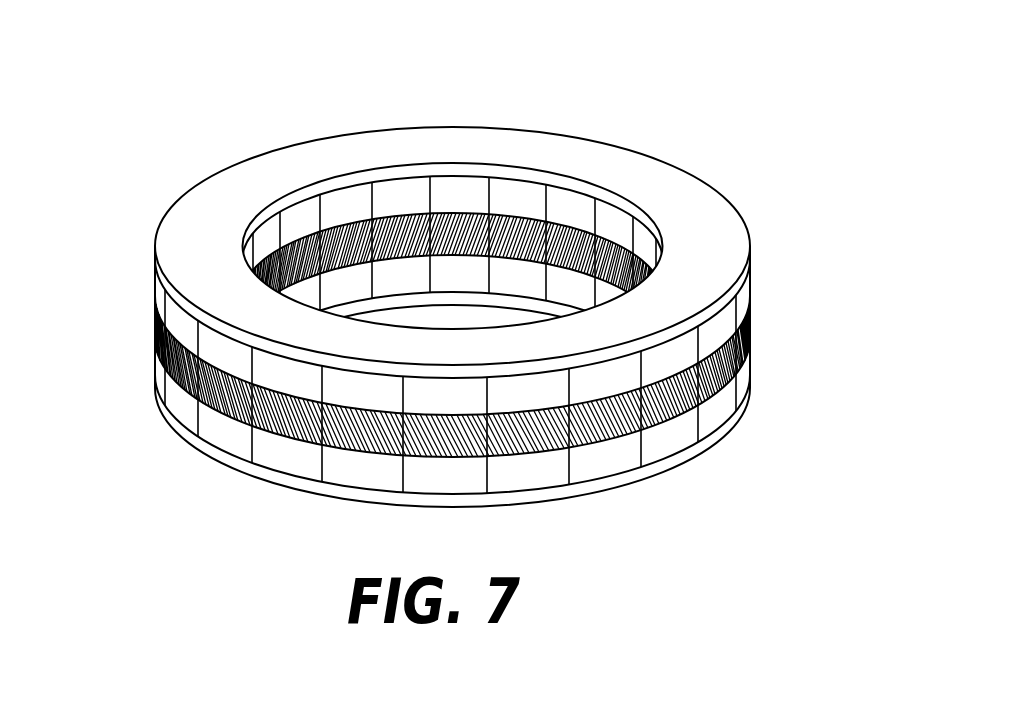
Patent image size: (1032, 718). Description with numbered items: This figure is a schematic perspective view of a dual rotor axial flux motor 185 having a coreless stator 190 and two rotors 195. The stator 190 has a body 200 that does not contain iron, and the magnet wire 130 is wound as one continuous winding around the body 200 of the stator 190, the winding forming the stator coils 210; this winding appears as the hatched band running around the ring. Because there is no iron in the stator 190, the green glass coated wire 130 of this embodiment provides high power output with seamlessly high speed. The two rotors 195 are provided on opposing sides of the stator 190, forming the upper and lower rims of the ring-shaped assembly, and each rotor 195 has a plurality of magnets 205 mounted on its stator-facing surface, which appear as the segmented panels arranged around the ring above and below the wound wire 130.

The dual rotor axial flux motor 185 is at (178, 88).
The stator 190 is at (393, 237).
The body 200 is at (453, 275).
The rotor 195 is at (710, 212).
The magnet 205 is at (750, 289).
The magnet wire 130 is at (743, 335).
The stator coil 210 is at (452, 376).